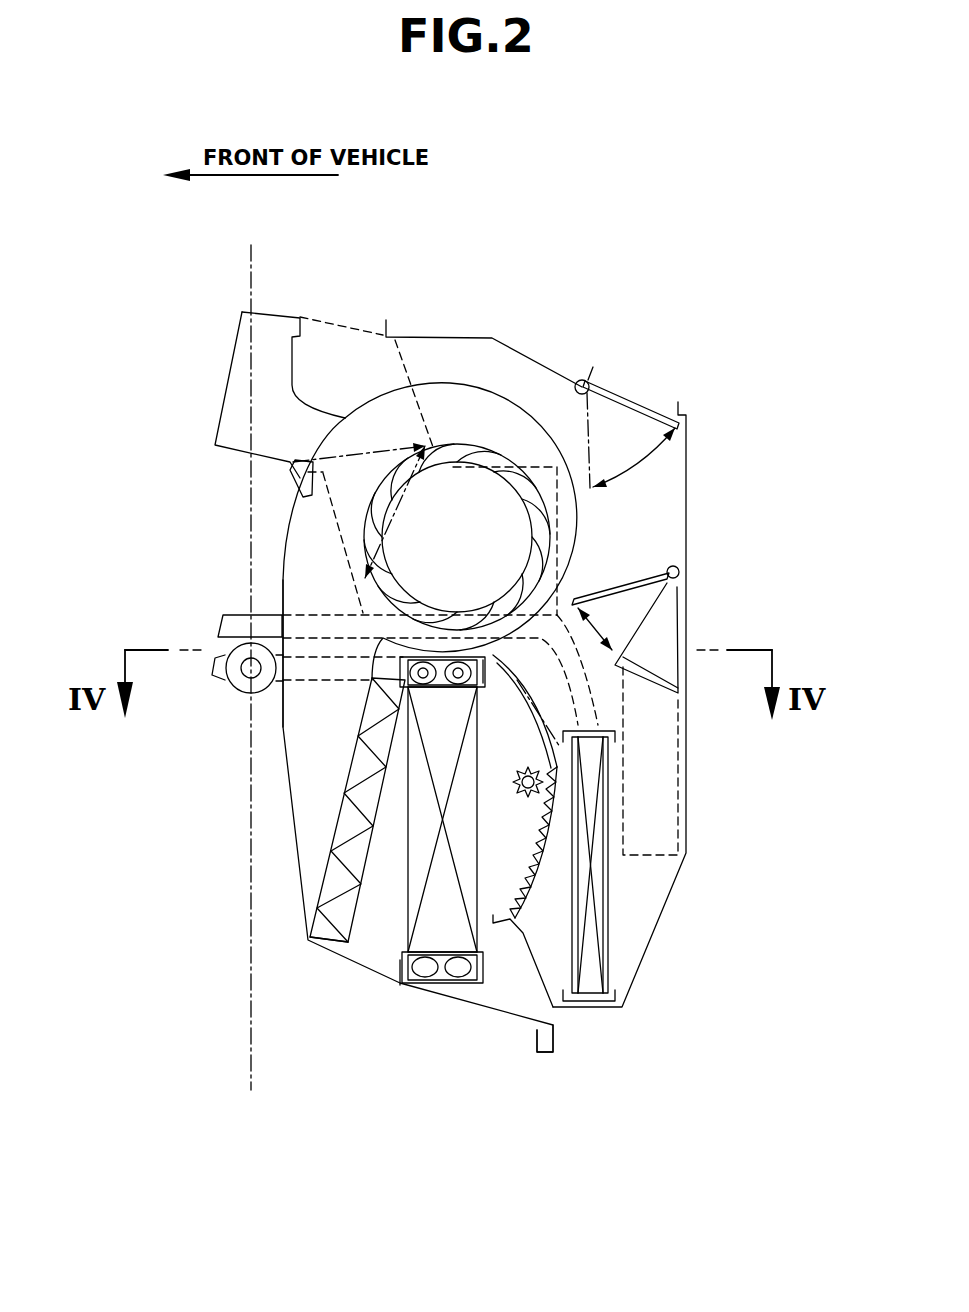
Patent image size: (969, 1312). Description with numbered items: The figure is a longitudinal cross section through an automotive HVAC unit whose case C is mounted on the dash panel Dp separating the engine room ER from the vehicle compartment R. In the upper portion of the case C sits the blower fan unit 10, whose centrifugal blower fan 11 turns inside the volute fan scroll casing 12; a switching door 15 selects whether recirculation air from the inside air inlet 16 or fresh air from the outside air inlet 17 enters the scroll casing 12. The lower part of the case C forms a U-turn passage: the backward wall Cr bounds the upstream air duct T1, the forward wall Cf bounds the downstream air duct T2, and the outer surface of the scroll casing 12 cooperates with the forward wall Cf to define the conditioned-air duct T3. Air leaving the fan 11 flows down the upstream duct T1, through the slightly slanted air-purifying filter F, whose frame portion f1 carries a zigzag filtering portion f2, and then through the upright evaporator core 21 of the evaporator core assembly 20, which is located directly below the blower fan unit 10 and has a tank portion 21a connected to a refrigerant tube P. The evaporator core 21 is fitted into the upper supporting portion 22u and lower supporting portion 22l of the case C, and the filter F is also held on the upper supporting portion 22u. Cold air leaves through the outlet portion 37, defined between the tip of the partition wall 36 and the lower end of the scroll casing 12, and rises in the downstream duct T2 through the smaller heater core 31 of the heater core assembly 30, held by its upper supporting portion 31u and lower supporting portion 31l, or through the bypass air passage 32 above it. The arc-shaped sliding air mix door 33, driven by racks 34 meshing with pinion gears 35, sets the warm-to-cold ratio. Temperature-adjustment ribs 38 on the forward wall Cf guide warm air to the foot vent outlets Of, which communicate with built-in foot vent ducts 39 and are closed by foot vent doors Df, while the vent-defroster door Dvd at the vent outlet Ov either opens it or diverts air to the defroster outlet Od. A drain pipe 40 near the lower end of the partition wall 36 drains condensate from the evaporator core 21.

The blower fan unit 10 is at (270, 542).
The blower fan 11 is at (468, 460).
The fan scroll casing 12 is at (283, 558).
The fresh-air/recirculation-air switching door 15 is at (330, 510).
The inside air inlet 16 is at (335, 578).
The outside air inlet 17 is at (230, 362).
The evaporator core assembly 20 is at (417, 1010).
The evaporator core 21 is at (433, 907).
The tank portion 21a is at (442, 697).
The upper supporting portion 22u is at (483, 683).
The lower supporting portion 22l is at (448, 987).
The heater core assembly 30 is at (700, 911).
The heater core 31 is at (593, 973).
The upper supporting portion 31u is at (610, 733).
The lower supporting portion 31l is at (615, 994).
The bypass air passage 32 is at (558, 687).
The air mix door 33 is at (543, 898).
The rack 34 is at (540, 828).
The pinion gear 35 is at (518, 790).
The partition wall 36 is at (527, 955).
The outlet portion 37 is at (495, 922).
The temperature-adjustment rib 38 is at (650, 690).
The foot vent duct 39 is at (690, 828).
The drain pipe 40 is at (551, 1058).
The dash panel Dp is at (253, 282).
The engine room ER is at (180, 274).
The vehicle compartment R is at (381, 276).
The defroster outlet Od is at (357, 318).
The vent-defroster door Dvd is at (618, 395).
The vent outlet Ov is at (648, 390).
The HVAC unit case C is at (695, 510).
The conditioned-air duct T3 is at (650, 539).
The foot vent door Df is at (623, 585).
The foot vent outlet Of is at (663, 627).
The downstream air duct T2 is at (665, 821).
The forward wall Cf is at (690, 783).
The upstream air duct T1 is at (338, 737).
The refrigerant tube P is at (220, 680).
The backward wall Cr is at (287, 783).
The air-purifying filter F is at (296, 878).
The frame portion f1 is at (340, 942).
The filtering portion f2 is at (313, 937).